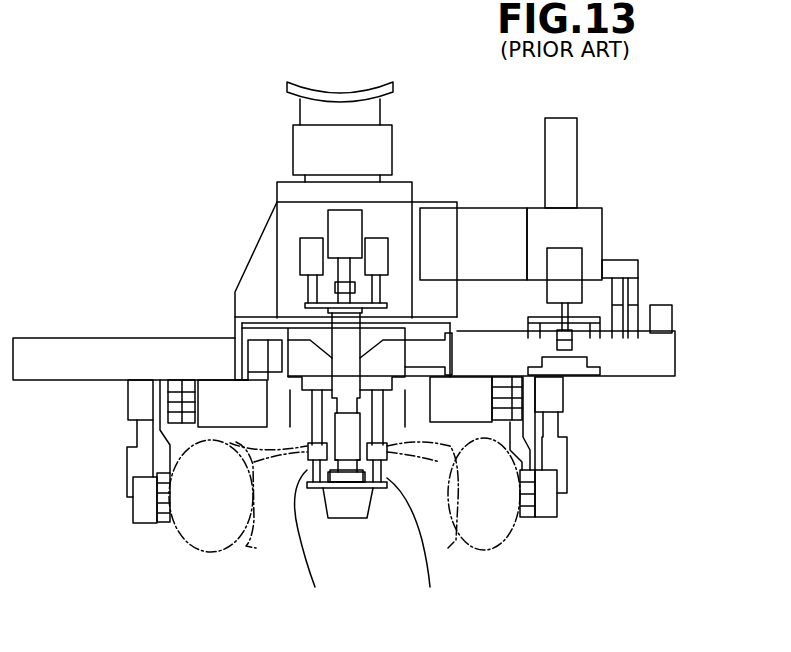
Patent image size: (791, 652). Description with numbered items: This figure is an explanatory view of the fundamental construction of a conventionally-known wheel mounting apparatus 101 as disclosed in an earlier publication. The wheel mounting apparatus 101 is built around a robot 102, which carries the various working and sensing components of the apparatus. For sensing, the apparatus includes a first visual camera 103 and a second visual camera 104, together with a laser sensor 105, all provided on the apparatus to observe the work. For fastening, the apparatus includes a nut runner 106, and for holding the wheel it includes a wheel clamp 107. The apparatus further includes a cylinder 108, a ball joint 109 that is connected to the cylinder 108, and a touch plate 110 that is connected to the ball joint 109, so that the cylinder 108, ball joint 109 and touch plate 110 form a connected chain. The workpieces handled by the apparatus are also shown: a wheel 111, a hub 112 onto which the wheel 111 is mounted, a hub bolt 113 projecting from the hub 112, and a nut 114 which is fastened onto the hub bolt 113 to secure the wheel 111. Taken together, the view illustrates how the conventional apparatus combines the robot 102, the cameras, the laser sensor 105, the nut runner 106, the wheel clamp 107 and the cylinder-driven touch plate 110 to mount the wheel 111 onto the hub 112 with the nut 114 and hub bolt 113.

The wheel mounting apparatus 101 is at (157, 117).
The robot 102 is at (288, 190).
The first visual camera 103 is at (638, 312).
The second visual camera 104 is at (572, 343).
The laser sensor 105 is at (530, 325).
The nut runner 106 is at (92, 375).
The wheel clamp 107 is at (147, 513).
The cylinder 108 is at (575, 262).
The ball joint 109 is at (620, 338).
The touch plate 110 is at (575, 345).
The wheel 111 is at (275, 457).
The hub 112 is at (353, 507).
The hub bolt 113 is at (420, 552).
The nut 114 is at (341, 548).